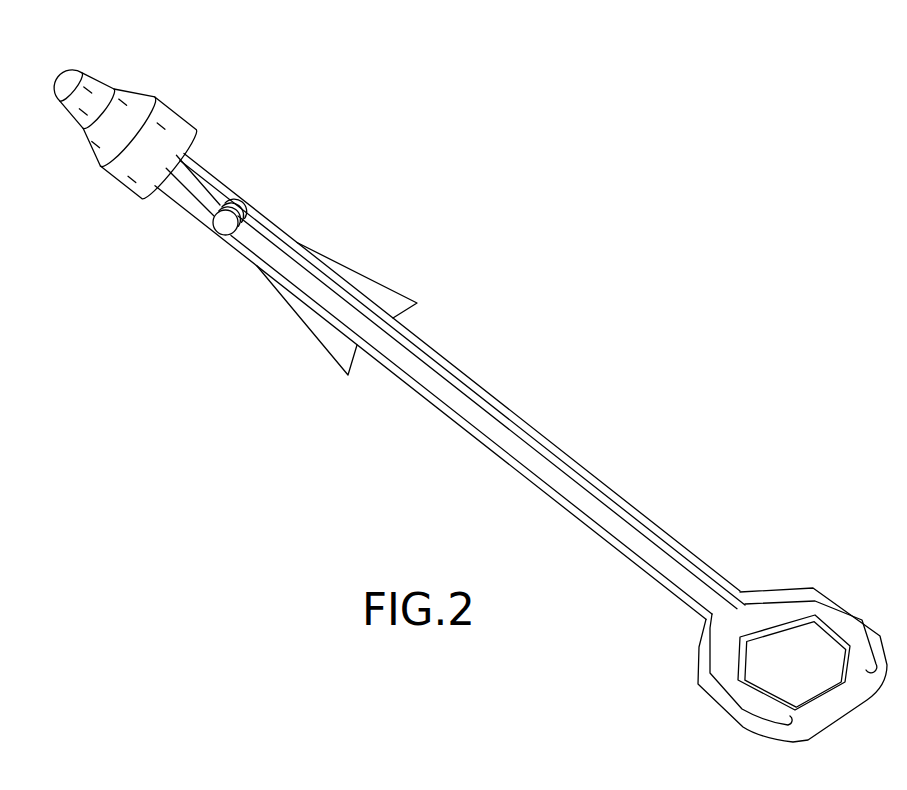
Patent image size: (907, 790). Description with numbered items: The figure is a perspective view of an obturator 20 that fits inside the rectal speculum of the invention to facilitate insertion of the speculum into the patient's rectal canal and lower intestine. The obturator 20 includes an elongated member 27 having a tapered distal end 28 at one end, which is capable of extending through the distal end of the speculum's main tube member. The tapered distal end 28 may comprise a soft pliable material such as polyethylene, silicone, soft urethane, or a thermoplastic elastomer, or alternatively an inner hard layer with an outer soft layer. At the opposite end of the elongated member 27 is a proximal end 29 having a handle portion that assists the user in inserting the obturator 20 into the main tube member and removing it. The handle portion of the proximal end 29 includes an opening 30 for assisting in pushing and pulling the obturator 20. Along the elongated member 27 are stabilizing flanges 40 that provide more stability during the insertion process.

The obturator 20 is at (433, 333).
The elongated member 27 is at (505, 413).
The tapered distal end 28 is at (98, 87).
The proximal end 29 is at (805, 592).
The opening 30 is at (813, 675).
The stabilizing flanges 40 is at (375, 287).